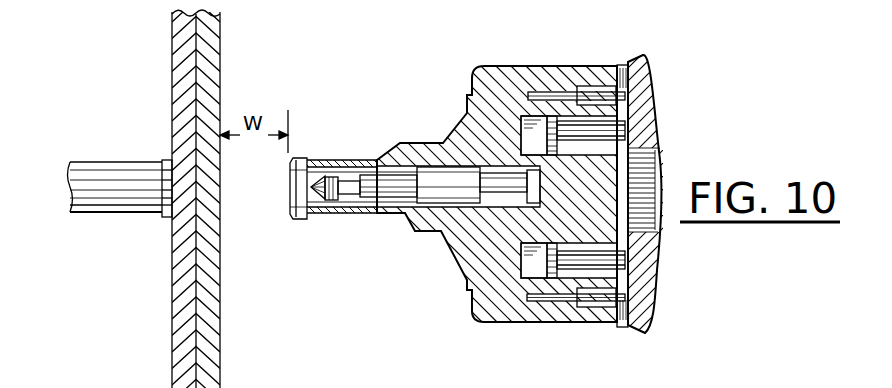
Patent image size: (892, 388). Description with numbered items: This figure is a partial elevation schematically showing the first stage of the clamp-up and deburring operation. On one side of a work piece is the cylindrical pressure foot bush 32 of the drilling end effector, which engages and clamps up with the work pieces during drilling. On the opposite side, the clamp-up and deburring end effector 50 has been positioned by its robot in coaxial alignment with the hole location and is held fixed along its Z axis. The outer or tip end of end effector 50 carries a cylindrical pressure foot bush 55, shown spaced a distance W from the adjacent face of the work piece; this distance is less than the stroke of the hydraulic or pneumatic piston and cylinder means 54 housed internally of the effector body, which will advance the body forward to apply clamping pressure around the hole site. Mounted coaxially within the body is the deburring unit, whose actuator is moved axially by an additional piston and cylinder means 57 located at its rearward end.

The pressure foot bush portion 32 is at (146, 160).
The clamp-up and deburring end effector 50 is at (514, 212).
The piston and cylinder means 54 is at (597, 263).
The pressure foot bush 55 is at (322, 213).
The piston and cylinder means 57 is at (498, 201).